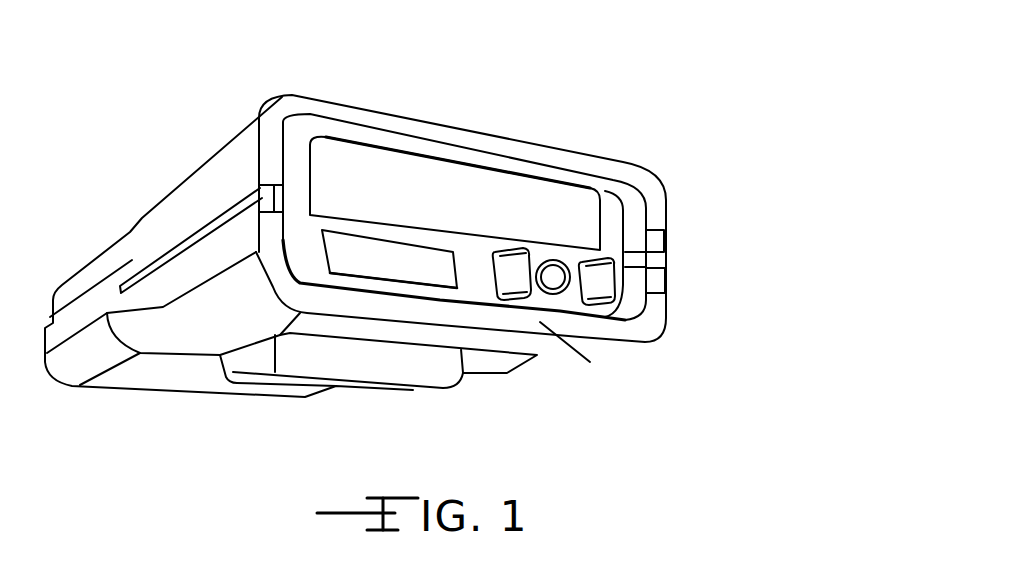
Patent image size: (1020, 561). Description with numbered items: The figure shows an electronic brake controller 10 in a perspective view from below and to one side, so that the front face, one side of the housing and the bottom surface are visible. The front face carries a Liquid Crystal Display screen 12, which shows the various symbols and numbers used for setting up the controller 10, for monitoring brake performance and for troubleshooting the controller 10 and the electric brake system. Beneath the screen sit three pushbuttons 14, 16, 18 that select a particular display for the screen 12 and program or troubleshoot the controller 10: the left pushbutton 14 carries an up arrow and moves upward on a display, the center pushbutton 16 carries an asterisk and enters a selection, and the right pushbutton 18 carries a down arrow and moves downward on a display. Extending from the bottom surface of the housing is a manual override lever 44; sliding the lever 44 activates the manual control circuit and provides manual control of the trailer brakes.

The electronic brake controller 10 is at (124, 190).
The Liquid Crystal Display (LCD) screen 12 is at (432, 182).
The pushbutton 14 is at (513, 267).
The pushbutton 16 is at (560, 270).
The pushbutton 18 is at (600, 289).
The manual override lever 44 is at (303, 430).